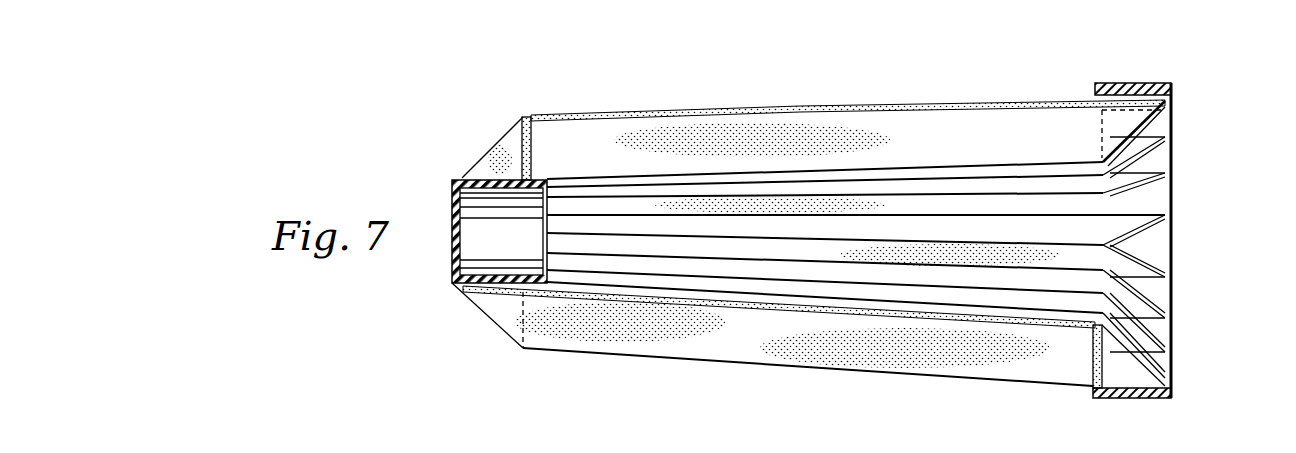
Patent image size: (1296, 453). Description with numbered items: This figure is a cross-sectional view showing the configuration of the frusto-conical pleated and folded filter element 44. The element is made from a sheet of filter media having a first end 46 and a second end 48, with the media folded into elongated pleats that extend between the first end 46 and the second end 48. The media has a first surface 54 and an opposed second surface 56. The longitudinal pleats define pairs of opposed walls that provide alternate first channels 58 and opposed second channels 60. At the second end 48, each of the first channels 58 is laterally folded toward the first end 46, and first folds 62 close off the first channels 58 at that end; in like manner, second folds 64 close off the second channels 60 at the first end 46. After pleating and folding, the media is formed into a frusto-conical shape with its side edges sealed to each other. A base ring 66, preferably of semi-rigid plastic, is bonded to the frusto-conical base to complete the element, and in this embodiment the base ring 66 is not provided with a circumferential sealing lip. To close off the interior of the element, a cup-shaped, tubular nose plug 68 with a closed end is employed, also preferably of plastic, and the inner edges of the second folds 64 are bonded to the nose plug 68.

The frusto-conical filter element 44 is at (663, 95).
The first end 46 is at (462, 180).
The second end 48 is at (1174, 138).
The first surface 54 is at (862, 105).
The second surface 56 is at (928, 111).
The first channels 58 is at (923, 357).
The second channels 60 is at (1097, 230).
The first folds 62 is at (1094, 357).
The second folds 64 is at (523, 142).
The base ring 66 is at (1138, 84).
The nose plug 68 is at (452, 255).